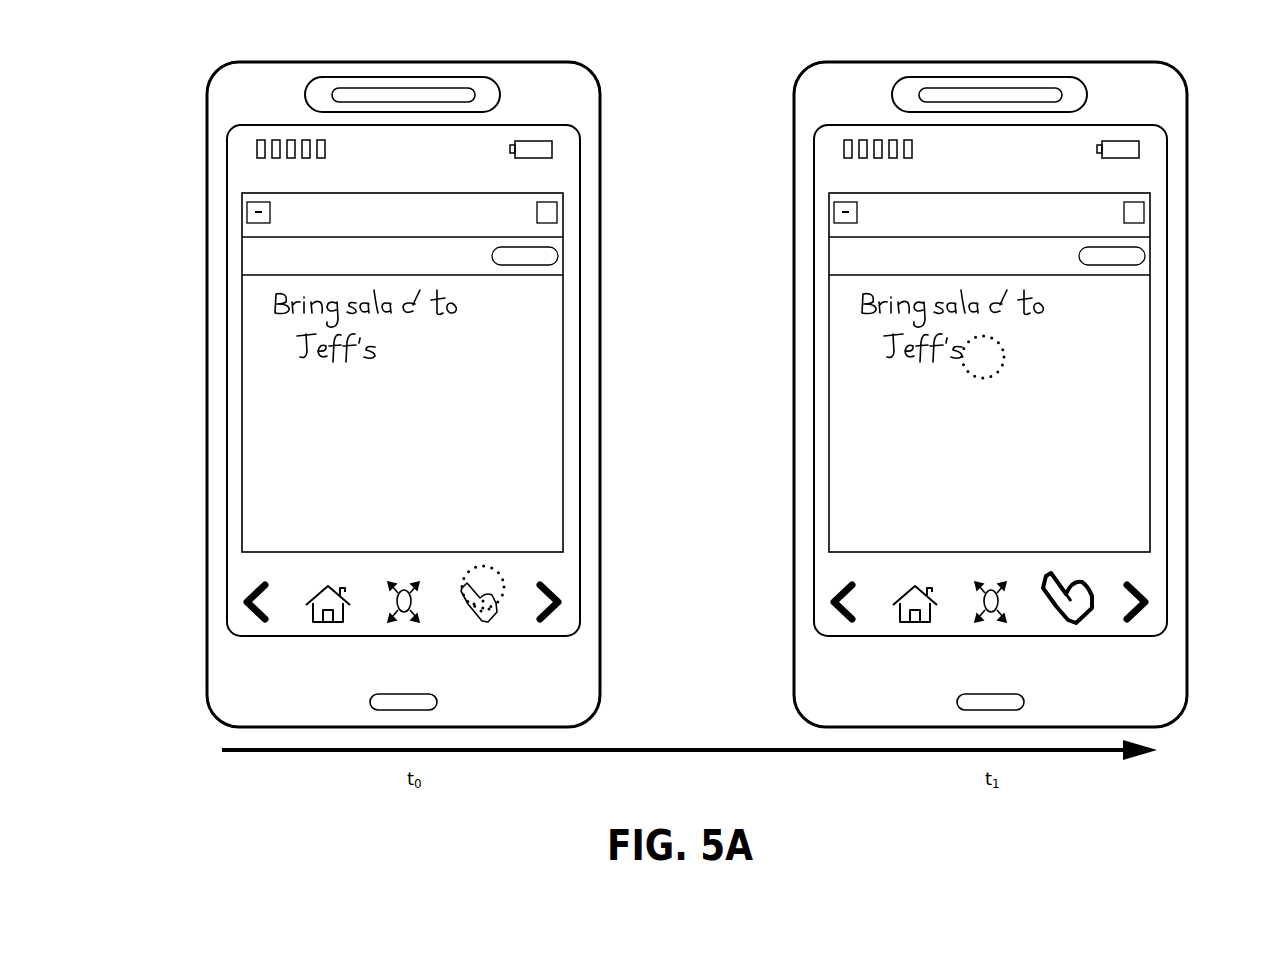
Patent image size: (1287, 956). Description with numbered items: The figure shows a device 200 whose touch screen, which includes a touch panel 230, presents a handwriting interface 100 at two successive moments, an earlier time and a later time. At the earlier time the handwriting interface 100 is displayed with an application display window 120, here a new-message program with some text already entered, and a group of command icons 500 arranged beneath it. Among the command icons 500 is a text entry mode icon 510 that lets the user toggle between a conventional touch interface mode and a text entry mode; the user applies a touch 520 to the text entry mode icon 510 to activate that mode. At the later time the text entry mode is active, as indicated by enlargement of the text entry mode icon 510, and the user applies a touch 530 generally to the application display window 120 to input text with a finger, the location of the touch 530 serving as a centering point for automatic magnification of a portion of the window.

The handwriting interface 100 is at (233, 183).
The application display window 120 is at (253, 352).
The device 200 is at (258, 55).
The touch panel 230 is at (297, 125).
The command icons 500 is at (191, 570).
The text entry mode icon 510 is at (497, 616).
The touch 520 is at (494, 566).
The touch 530 is at (994, 340).